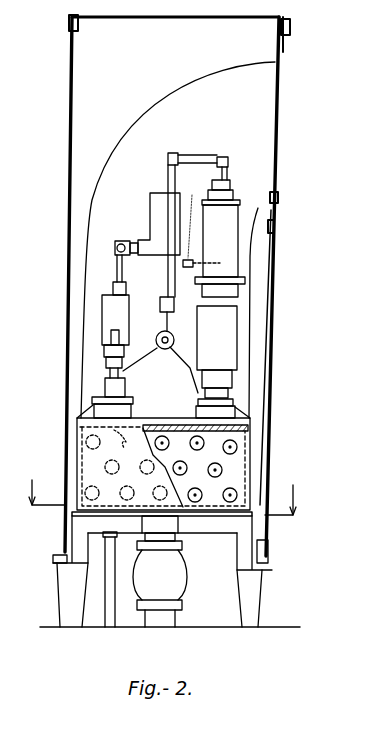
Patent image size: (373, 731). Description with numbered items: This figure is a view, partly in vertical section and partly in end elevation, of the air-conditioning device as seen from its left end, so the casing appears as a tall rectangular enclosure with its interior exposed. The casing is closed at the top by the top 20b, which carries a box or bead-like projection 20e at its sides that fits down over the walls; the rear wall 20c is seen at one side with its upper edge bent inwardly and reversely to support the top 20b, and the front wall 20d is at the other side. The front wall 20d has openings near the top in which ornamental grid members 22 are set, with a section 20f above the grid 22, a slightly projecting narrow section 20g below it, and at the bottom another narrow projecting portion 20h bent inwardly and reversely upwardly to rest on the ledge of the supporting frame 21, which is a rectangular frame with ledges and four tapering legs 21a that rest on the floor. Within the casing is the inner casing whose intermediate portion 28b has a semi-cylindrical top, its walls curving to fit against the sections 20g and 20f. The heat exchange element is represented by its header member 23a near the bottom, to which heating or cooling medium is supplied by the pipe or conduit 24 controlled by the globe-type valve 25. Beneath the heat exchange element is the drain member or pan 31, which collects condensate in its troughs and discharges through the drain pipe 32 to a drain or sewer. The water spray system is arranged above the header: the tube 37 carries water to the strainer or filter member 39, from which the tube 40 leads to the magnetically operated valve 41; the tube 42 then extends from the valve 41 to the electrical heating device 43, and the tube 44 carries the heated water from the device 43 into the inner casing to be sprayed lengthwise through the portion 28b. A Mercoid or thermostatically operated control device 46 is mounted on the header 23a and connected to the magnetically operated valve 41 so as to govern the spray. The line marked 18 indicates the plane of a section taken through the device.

The top 20b is at (127, 18).
The rear wall 20c is at (64, 302).
The front wall 20d is at (271, 289).
The projection 20e is at (290, 32).
The section 20f is at (283, 50).
The projecting narrow section 20g is at (279, 208).
The projecting portion 20h is at (268, 549).
The grid members 22 is at (277, 138).
The intermediate portion 28b is at (86, 270).
The header member 23a is at (82, 463).
The tube 37 is at (165, 447).
The section line 18 is at (163, 502).
The drain member or pan 31 is at (208, 530).
The supporting frame 21 is at (246, 580).
The legs 21a is at (66, 589).
The drain pipe 32 is at (108, 607).
The valve 25 is at (177, 587).
The pipe or conduit 24 is at (170, 618).
The tube 44 is at (200, 157).
The electrical heating device 43 is at (250, 208).
The thermostatically operated control device 46 is at (236, 355).
The tube 42 is at (163, 279).
The magnetically operated valve 41 is at (150, 207).
The tube 40 is at (114, 250).
The strainer or filter member 39 is at (133, 299).